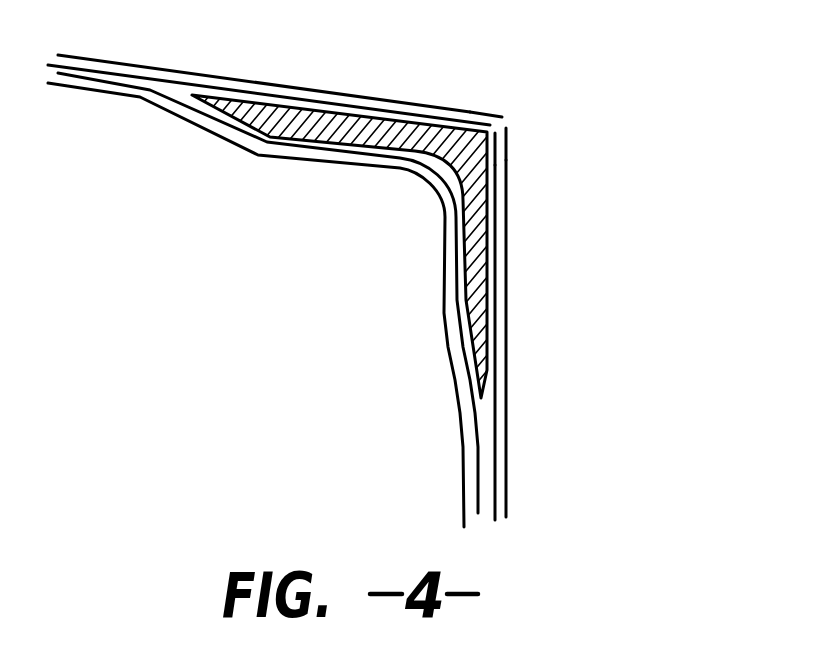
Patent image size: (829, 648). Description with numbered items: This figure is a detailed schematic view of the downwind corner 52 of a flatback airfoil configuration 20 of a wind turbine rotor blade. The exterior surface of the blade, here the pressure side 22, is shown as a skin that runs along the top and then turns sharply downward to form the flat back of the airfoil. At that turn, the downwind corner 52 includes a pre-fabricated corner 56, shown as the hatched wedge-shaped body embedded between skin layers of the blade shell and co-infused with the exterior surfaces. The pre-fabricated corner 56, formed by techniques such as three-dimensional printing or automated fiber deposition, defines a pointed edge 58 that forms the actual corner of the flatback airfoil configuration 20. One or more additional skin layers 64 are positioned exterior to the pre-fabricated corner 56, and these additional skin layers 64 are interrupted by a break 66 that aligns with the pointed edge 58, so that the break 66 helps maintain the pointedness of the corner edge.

The flatback airfoil configuration 20 is at (658, 142).
The pressure side 22 is at (228, 64).
The downwind corner 52 is at (536, 127).
The pre-fabricated corner 56 is at (489, 232).
The pointed edge 58 is at (496, 117).
The additional skin layer 64 is at (370, 96).
The break 66 is at (507, 120).